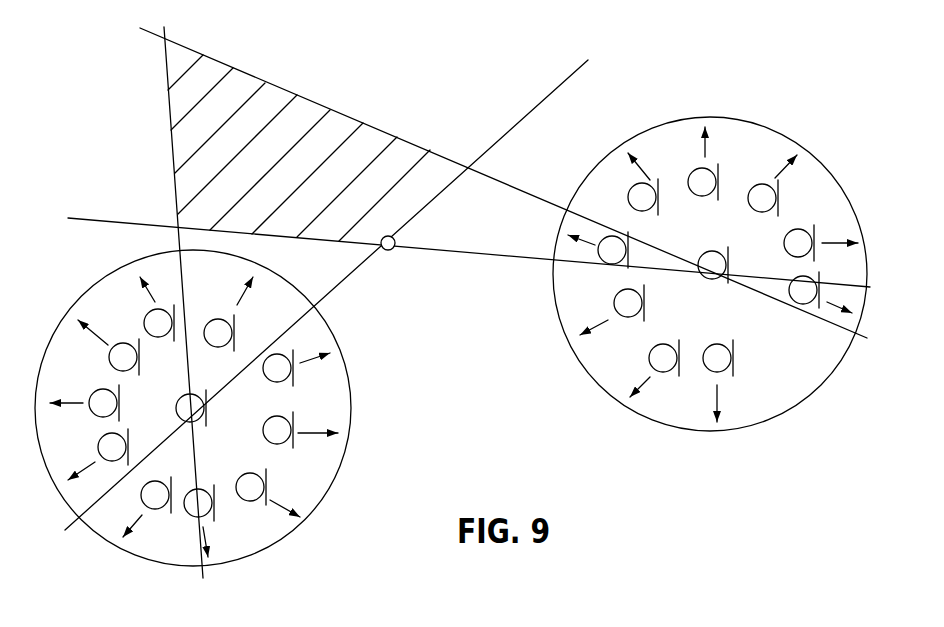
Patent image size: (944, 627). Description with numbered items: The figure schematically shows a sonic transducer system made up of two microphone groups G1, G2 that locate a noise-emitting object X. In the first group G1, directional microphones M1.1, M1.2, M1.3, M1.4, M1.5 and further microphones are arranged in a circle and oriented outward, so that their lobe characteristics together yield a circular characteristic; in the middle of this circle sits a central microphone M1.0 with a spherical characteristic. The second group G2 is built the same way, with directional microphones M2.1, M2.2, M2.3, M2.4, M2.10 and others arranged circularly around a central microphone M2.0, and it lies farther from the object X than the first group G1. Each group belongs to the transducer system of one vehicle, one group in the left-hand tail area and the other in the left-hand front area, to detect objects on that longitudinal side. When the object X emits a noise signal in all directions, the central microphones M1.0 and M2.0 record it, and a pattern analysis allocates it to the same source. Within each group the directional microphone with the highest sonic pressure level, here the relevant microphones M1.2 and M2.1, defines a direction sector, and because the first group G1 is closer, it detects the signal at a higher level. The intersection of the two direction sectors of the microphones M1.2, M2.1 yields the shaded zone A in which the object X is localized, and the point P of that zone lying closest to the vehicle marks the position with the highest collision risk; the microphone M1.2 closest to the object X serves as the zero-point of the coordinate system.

The object X is at (299, 148).
The point P is at (390, 250).
The microphone group G1 is at (310, 497).
The microphone group G2 is at (758, 415).
The central microphone M1.0 is at (197, 421).
The directional microphone M1.1 is at (148, 312).
The directional microphone M1.2 is at (217, 320).
The directional microphone M1.3 is at (280, 356).
The directional microphone M1.4 is at (283, 443).
The directional microphone M1.5 is at (255, 500).
The central microphone M2.0 is at (703, 278).
The directional microphone M2.1 is at (604, 240).
The directional microphone M2.2 is at (615, 298).
The directional microphone M2.3 is at (650, 355).
The directional microphone M2.4 is at (708, 370).
The directional microphone M2.10 is at (628, 195).